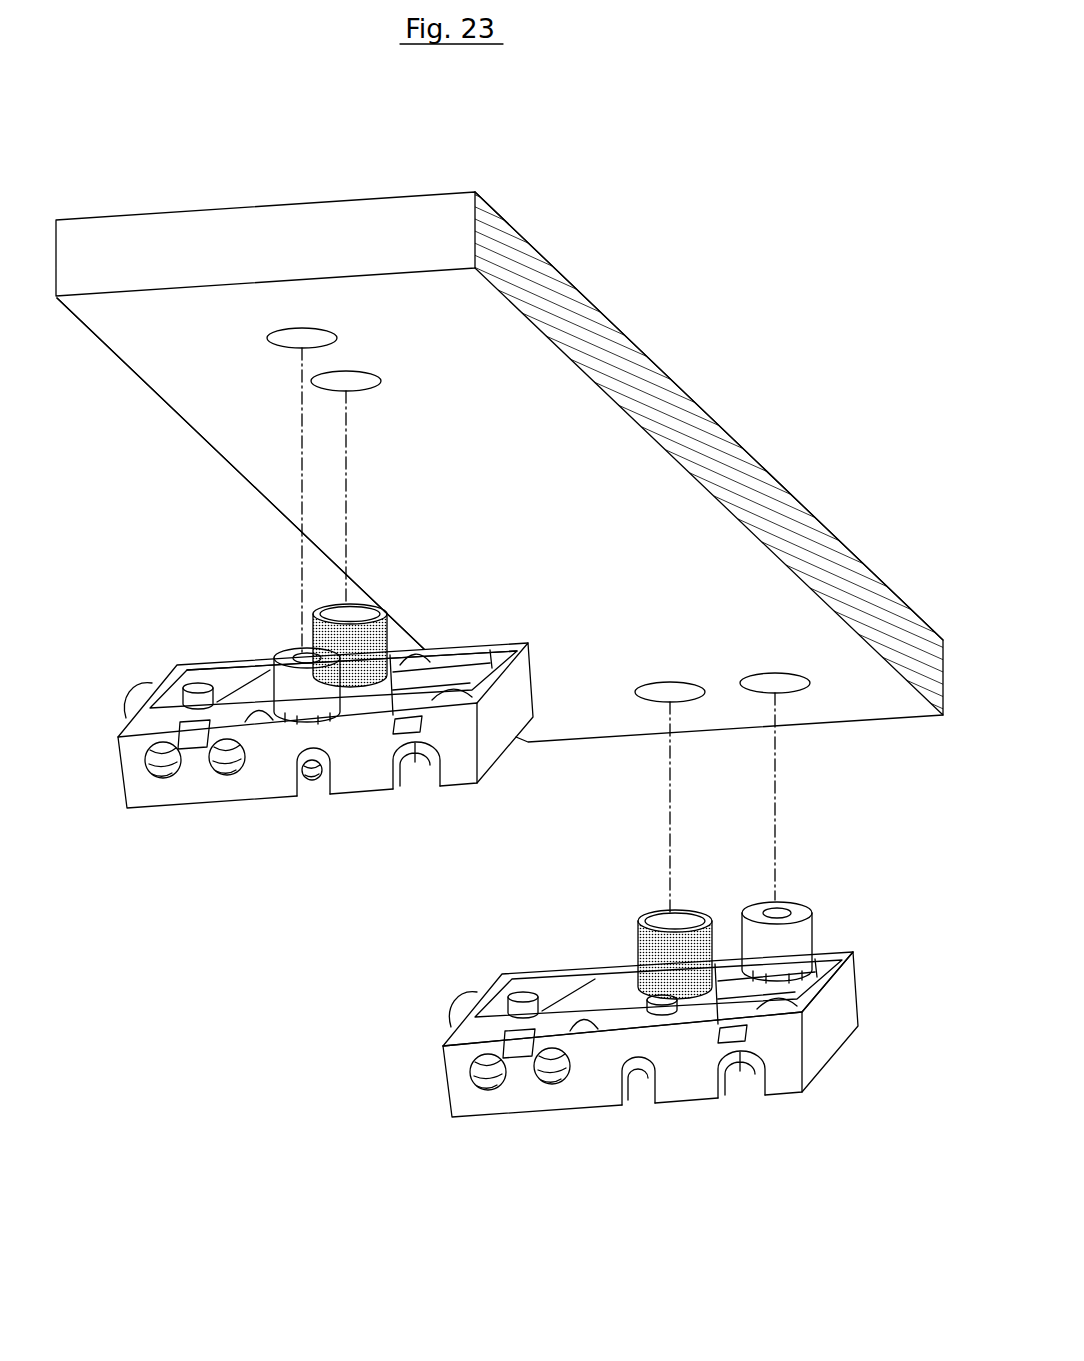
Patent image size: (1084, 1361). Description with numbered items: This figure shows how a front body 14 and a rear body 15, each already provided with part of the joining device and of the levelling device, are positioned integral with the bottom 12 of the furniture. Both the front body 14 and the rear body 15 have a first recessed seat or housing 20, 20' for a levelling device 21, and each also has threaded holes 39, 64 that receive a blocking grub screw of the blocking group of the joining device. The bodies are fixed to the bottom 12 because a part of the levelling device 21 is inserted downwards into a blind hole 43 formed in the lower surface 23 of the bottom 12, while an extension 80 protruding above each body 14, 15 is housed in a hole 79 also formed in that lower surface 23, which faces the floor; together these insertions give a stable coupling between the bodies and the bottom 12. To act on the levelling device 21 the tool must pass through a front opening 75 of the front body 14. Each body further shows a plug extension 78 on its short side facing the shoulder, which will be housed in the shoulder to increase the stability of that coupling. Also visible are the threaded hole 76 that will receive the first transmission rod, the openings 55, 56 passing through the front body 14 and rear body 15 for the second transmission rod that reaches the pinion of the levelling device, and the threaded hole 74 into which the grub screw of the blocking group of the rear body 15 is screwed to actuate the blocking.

The bottom 12 is at (182, 263).
The front body 14 is at (482, 612).
The rear body 15 is at (778, 1168).
The first recessed seat 20 is at (325, 784).
The first recessed seat 20' is at (689, 953).
The levelling device 21 is at (279, 646).
The lower surface 23 is at (530, 360).
The threaded hole 39 is at (163, 752).
The blind hole 43 is at (291, 332).
The opening 55 is at (420, 770).
The opening 56 is at (740, 1076).
The threaded hole 64 is at (487, 1072).
The threaded hole 74 is at (552, 1065).
The front opening 75 is at (305, 778).
The threaded hole 76 is at (227, 757).
The plug extension 78 is at (142, 688).
The hole 79 is at (362, 370).
The extension 80 is at (383, 616).